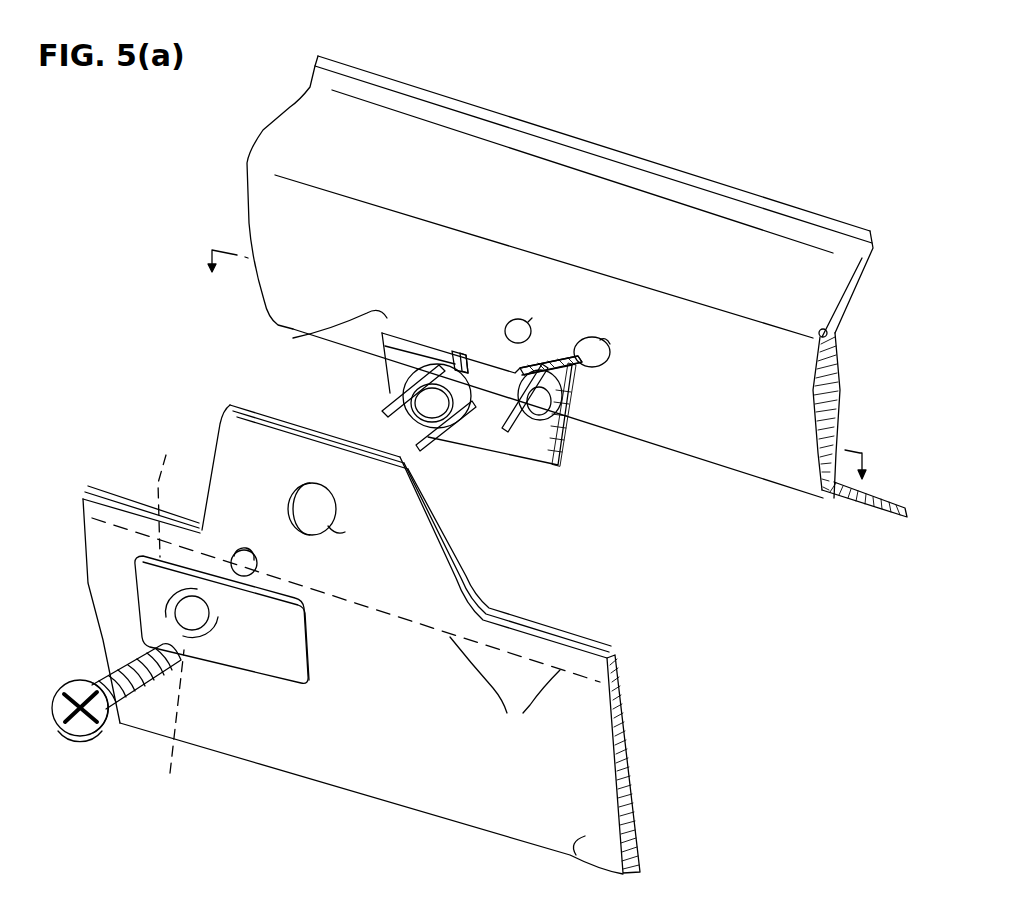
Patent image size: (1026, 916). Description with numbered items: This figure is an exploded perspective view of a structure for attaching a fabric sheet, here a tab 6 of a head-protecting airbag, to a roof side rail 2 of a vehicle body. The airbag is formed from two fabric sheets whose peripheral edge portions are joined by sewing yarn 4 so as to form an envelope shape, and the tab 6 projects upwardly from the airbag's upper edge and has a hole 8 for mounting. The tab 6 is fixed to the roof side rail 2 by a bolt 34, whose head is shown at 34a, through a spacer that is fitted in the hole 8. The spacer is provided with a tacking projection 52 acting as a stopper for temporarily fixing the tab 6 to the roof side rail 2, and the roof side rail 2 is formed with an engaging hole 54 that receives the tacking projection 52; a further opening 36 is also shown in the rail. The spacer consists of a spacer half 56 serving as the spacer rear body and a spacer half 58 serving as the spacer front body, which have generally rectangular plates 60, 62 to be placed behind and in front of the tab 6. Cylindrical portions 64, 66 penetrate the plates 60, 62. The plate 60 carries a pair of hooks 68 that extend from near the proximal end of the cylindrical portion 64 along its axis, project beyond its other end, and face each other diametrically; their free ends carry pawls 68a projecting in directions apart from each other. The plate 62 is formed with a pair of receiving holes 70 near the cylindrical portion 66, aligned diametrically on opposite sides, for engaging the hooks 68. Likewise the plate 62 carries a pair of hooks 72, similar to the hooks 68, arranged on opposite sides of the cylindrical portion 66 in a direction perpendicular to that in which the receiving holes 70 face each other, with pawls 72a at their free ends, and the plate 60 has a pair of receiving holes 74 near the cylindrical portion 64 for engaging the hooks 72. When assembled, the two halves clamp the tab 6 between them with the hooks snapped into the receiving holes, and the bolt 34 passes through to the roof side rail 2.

The roof side rail 2 is at (393, 138).
The sewing yarn 4 is at (505, 693).
The tab 6 is at (443, 591).
The hole 8 is at (357, 538).
The bolt 34 is at (93, 672).
The screw head 34a is at (73, 736).
The hole 36 is at (515, 317).
The tacking projection 52 is at (582, 397).
The engaging hole 54 is at (593, 336).
The spacer half 56 is at (318, 339).
The spacer half 58 is at (170, 488).
The plate 60 is at (518, 444).
The plate 62 is at (280, 670).
The cylindrical portion 64 is at (452, 345).
The cylindrical portion 66 is at (158, 734).
The hooks 68 is at (387, 372).
The pawls 68a is at (390, 397).
The receiving holes 70 is at (172, 626).
The hooks 72 is at (228, 550).
The pawls 72a is at (267, 580).
The receiving holes 74 is at (466, 346).